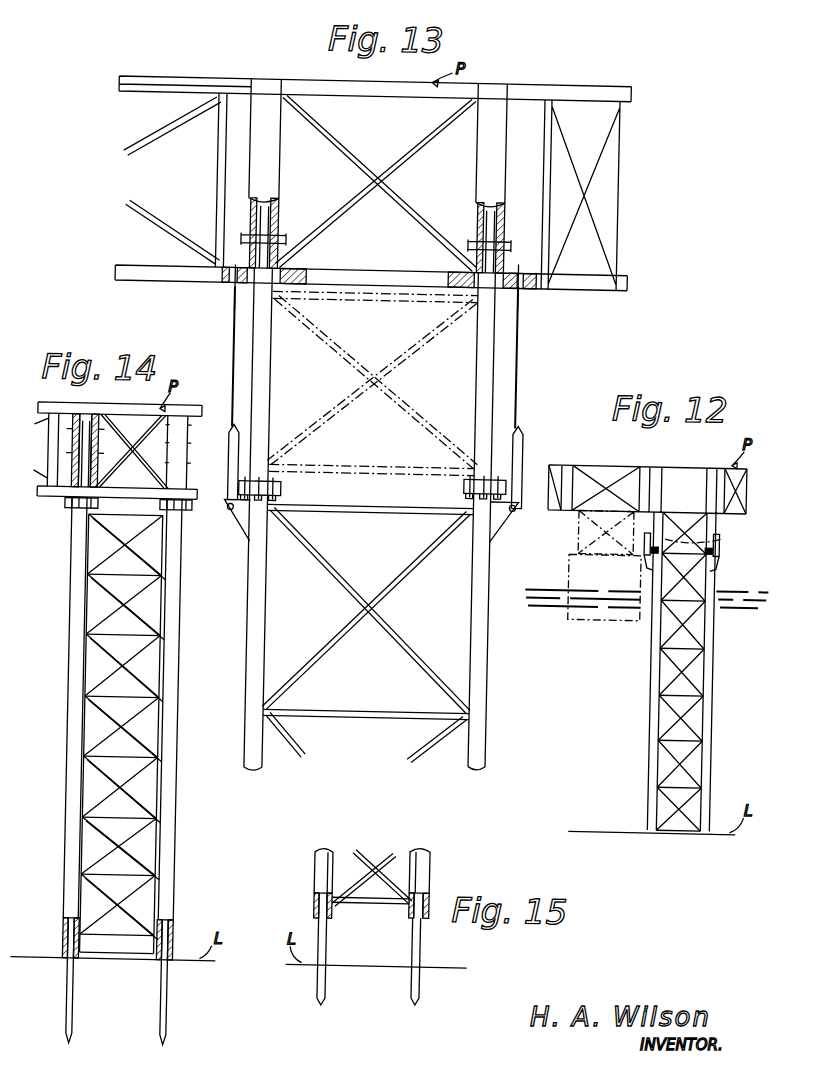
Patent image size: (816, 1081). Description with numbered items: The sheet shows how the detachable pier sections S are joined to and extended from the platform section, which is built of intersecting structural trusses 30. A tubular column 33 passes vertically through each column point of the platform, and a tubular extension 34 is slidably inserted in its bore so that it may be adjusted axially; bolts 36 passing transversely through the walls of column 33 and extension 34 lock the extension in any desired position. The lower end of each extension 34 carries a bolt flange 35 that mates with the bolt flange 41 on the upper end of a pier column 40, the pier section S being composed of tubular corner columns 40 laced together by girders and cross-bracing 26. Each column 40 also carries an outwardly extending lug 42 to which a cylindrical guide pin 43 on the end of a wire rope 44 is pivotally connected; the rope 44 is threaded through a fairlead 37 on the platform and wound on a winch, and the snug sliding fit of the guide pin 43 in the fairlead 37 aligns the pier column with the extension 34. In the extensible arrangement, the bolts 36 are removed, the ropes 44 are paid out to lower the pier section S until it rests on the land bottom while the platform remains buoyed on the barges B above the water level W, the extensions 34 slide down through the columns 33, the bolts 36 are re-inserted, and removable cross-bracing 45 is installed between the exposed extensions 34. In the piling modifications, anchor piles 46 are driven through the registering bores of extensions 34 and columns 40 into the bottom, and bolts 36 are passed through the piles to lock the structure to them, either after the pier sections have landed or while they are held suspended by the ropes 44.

In FIG. 14, the cross brace 26 is at (103, 444).
In FIG. 13, the structural truss 30 is at (400, 91).
In FIG. 13, the tubular column 33 is at (283, 142).
In FIG. 14, the tubular column 33 is at (71, 443).
In FIG. 13, the tubular extension 34 is at (275, 340).
In FIG. 14, the tubular extension 34 is at (97, 468).
In FIG. 12, the tubular extension 34 is at (668, 515).
In FIG. 13, the bolt flange 35 is at (288, 482).
In FIG. 13, the bolt 36 is at (283, 230).
In FIG. 13, the fairlead 37 is at (238, 284).
In FIG. 14, the tubular column 40 is at (75, 828).
In FIG. 15, the tubular column 40 is at (315, 871).
In FIG. 13, the bolt flange 41 is at (289, 492).
In FIG. 13, the ear or lug 42 is at (244, 520).
In FIG. 13, the cylindrical guide pin 43 is at (246, 442).
In FIG. 13, the wire rope 44 is at (238, 328).
In FIG. 13, the removable cross-bracing 45 is at (403, 355).
In FIG. 12, the removable cross-bracing 45 is at (723, 536).
In FIG. 14, the anchor pile 46 is at (77, 1004).
In FIG. 15, the anchor pile 46 is at (418, 847).
In FIG. 14, the pier section S is at (70, 667).
In FIG. 12, the pier section S is at (724, 688).
In FIG. 12, the barge B is at (602, 623).
In FIG. 12, the water level W is at (741, 596).